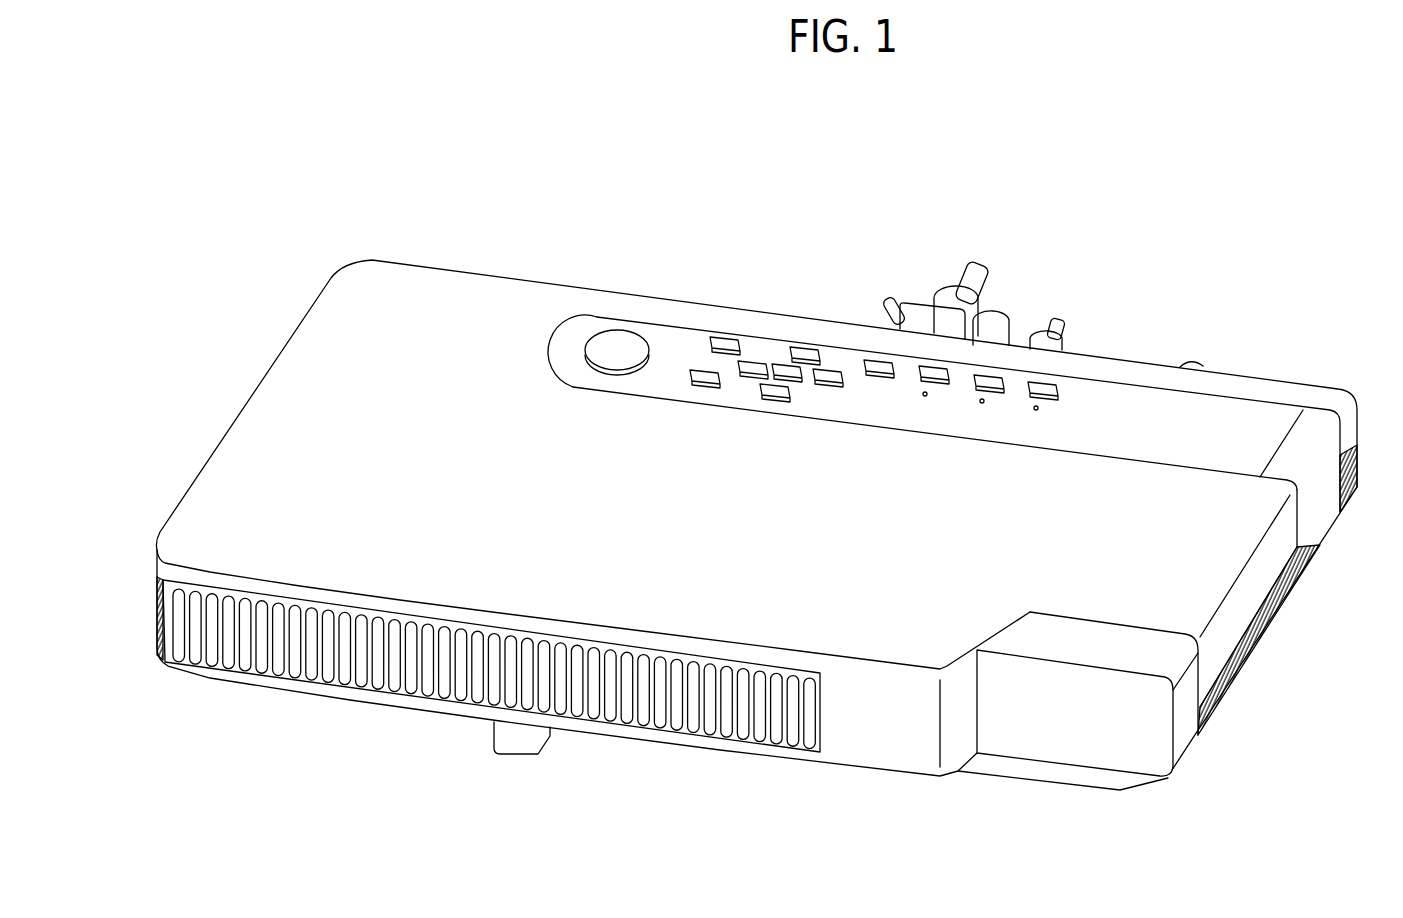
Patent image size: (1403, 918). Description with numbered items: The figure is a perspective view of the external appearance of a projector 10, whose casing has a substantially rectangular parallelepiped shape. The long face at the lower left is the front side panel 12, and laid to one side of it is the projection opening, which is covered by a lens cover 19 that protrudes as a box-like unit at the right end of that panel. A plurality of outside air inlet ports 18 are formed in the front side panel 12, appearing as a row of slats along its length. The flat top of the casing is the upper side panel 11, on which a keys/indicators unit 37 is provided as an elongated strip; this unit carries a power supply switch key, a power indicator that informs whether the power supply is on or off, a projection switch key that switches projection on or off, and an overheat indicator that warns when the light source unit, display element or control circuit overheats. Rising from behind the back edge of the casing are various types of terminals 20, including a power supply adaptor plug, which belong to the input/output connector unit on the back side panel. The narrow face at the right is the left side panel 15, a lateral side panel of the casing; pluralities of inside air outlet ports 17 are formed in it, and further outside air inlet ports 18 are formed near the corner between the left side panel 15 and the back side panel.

The projector 10 is at (713, 222).
The upper side panel 11 is at (523, 288).
The front side panel 12 is at (868, 748).
The left side panel 15 is at (1253, 592).
The inside air outlet ports 17 is at (1240, 670).
The outside air inlet ports 18 is at (745, 740).
The lens cover 19 is at (1090, 745).
The terminals 20 is at (1013, 275).
The keys/indicators unit 37 is at (805, 305).